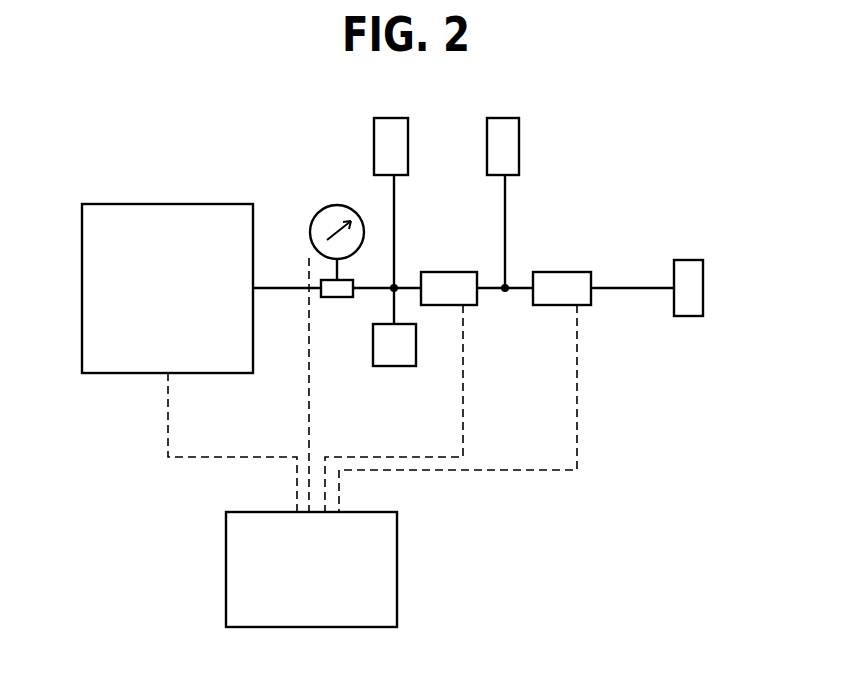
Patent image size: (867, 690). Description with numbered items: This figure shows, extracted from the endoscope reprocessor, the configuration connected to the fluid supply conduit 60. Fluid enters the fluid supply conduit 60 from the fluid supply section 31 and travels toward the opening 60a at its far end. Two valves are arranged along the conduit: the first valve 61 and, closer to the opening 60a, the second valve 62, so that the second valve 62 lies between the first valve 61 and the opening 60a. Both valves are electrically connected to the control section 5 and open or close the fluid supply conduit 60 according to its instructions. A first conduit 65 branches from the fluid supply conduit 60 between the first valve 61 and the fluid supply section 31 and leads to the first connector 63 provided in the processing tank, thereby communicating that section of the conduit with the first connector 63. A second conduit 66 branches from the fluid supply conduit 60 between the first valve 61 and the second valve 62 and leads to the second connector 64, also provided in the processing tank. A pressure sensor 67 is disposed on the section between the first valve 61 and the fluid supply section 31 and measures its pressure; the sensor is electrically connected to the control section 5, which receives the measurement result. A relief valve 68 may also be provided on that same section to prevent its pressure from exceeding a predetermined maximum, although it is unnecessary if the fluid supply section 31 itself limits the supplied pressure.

The control section 5 is at (226, 570).
The fluid supply section 31 is at (158, 204).
The fluid supply conduit 60 is at (637, 288).
The opening 60a is at (703, 288).
The first valve 61 is at (460, 272).
The second valve 62 is at (577, 272).
The first connector 63 is at (408, 139).
The second connector 64 is at (519, 139).
The first conduit 65 is at (394, 203).
The second conduit 66 is at (505, 203).
The pressure sensor 67 is at (326, 210).
The relief valve 68 is at (390, 366).